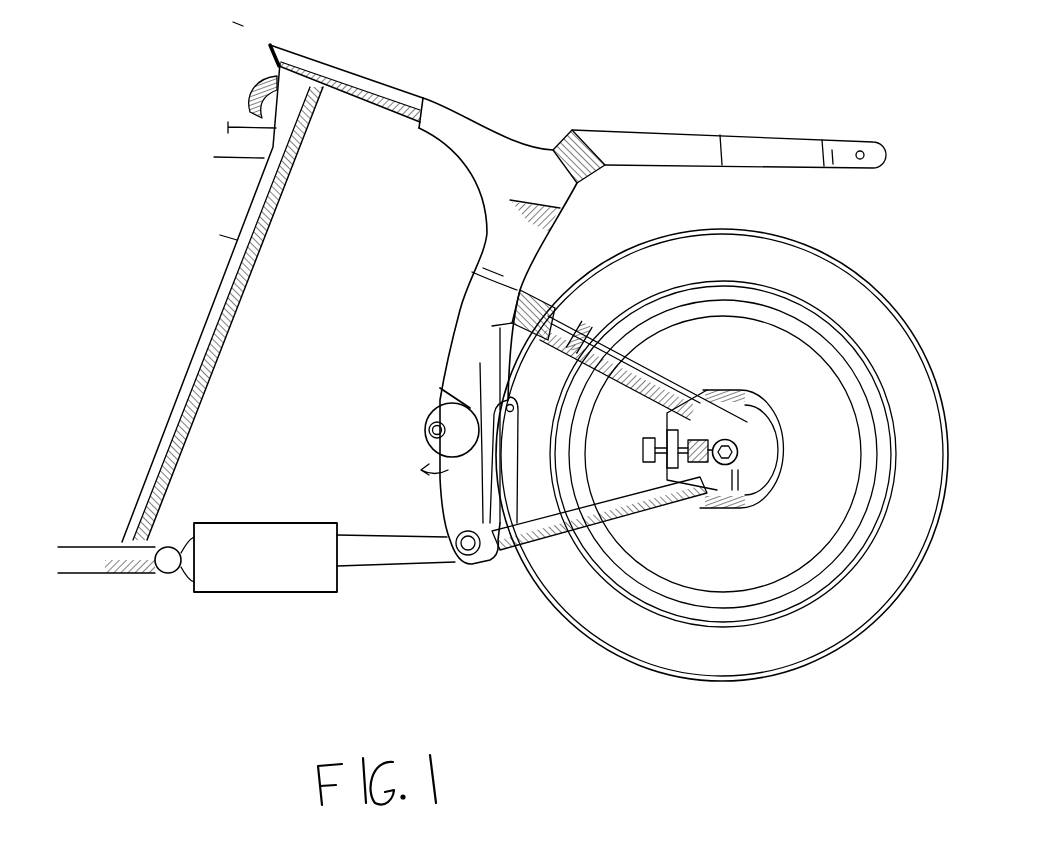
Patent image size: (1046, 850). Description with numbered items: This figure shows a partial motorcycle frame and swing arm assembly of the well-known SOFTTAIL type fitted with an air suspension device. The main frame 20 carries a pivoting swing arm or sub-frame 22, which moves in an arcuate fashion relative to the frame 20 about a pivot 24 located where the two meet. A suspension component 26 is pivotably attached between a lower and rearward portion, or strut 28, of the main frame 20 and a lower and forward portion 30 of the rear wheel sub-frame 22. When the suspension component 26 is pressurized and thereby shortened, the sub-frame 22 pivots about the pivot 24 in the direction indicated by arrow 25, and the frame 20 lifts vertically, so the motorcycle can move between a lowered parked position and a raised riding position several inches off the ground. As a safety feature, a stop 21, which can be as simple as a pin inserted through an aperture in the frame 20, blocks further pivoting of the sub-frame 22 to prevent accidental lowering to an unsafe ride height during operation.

The frame 20 is at (392, 131).
The stop 21 is at (443, 352).
The swing arm 22 is at (657, 513).
The pivot 24 is at (430, 428).
The arrow 25 is at (442, 389).
The suspension component 26 is at (312, 592).
The strut 28 is at (168, 573).
The lower and forward portion of the rear wheel sub-frame 30 is at (472, 565).